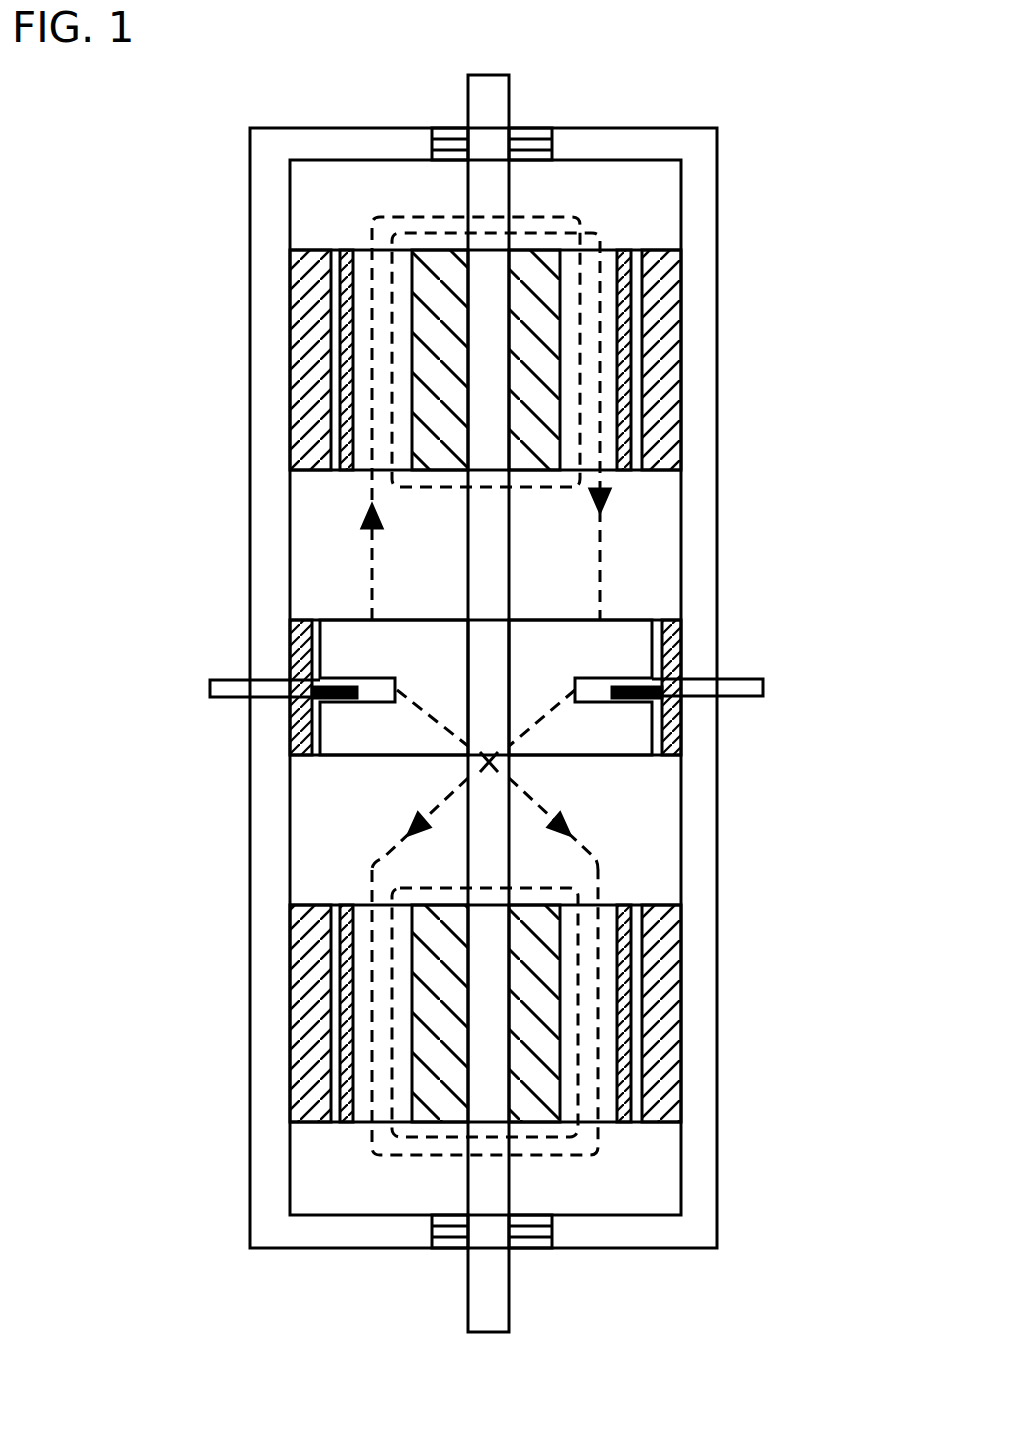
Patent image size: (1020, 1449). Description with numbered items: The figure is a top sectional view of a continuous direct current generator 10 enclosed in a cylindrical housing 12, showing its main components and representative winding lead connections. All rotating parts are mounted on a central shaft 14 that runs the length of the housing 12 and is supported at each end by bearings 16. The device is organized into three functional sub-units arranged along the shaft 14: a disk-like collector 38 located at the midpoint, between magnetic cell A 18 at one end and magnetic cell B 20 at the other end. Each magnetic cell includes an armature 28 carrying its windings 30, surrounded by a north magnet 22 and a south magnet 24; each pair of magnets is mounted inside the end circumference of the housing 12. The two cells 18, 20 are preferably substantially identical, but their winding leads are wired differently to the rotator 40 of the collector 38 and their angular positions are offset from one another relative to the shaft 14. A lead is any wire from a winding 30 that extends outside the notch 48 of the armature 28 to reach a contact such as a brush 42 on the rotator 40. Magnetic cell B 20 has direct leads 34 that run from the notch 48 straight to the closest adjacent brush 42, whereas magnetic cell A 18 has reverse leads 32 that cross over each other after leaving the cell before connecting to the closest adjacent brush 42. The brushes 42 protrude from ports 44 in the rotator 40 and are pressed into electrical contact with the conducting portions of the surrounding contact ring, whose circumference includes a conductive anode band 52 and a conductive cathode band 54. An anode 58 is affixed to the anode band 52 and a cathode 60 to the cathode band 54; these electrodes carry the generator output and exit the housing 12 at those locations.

The continuous direct current generator 10 is at (216, 158).
The housing 12 is at (267, 830).
The central shaft 14 is at (496, 100).
The bearings 16 is at (450, 128).
The magnetic cell A 18 is at (270, 1040).
The magnetic cell B 20 is at (272, 396).
The north magnet 22 is at (308, 335).
The south magnet 24 is at (663, 349).
The armature 28 is at (630, 471).
The windings 30 is at (598, 219).
The reverse leads 32 is at (593, 858).
The direct leads 34 is at (605, 553).
The collector 38 is at (268, 735).
The rotator 40 is at (345, 628).
The brush 42 is at (627, 702).
The port 44 is at (582, 703).
The notch 48 is at (360, 250).
The anode band 52 is at (683, 637).
The cathode band 54 is at (297, 658).
The anode 58 is at (767, 688).
The cathode 60 is at (197, 688).